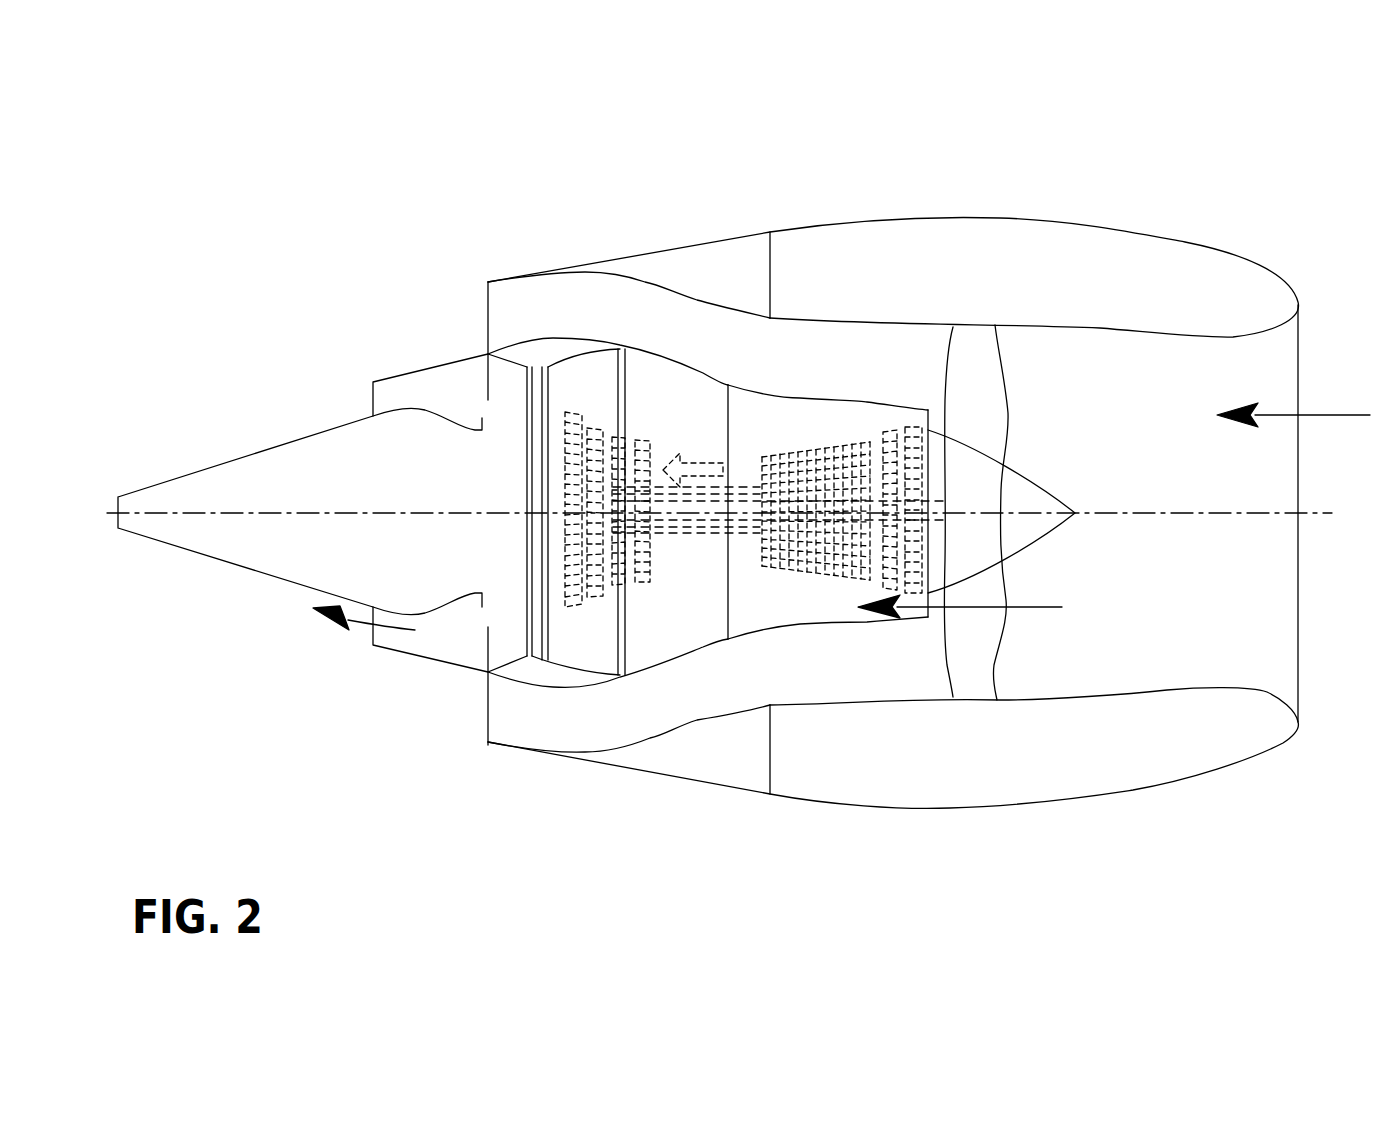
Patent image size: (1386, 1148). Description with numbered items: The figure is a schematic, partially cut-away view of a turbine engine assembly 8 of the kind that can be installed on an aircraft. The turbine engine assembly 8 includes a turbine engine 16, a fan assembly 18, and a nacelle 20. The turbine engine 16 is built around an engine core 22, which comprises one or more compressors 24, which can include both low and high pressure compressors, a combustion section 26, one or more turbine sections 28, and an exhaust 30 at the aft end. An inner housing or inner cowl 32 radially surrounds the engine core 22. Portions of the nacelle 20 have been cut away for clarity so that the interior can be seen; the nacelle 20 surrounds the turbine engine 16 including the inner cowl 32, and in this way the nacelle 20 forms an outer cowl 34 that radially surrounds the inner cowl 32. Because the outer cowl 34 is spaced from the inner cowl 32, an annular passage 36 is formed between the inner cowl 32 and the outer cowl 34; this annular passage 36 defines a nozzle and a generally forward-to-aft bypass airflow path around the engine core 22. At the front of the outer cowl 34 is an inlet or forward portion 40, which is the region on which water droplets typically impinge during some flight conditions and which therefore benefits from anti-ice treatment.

The turbine engine assembly 8 is at (1095, 152).
The turbine engine 16 is at (883, 417).
The fan assembly 18 is at (973, 353).
The nacelle 20 is at (1088, 223).
The engine core 22 is at (830, 596).
The compressor 24 is at (792, 575).
The combustion section 26 is at (662, 530).
The turbine section 28 is at (565, 595).
The exhaust 30 is at (430, 643).
The inner cowl 32 is at (705, 385).
The outer cowl 34 is at (683, 297).
The annular passage 36 is at (520, 733).
The forward portion 40 is at (1303, 283).